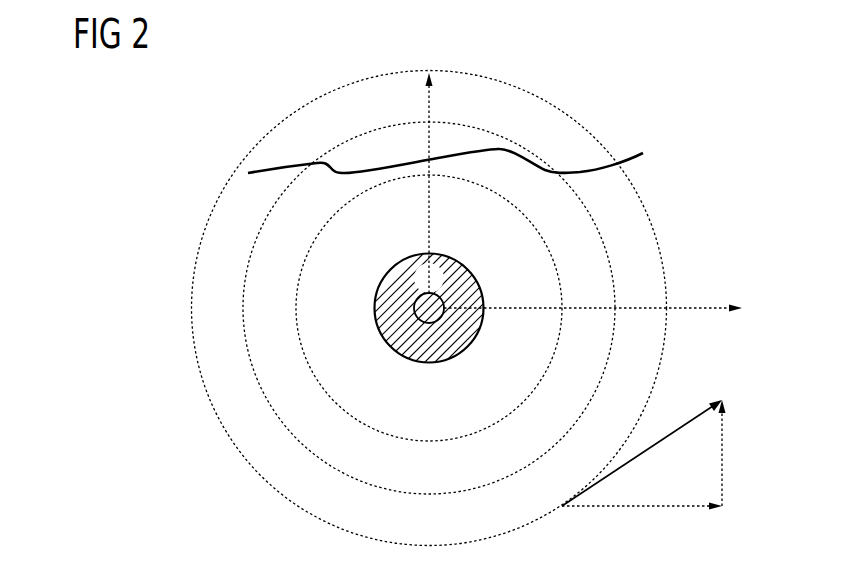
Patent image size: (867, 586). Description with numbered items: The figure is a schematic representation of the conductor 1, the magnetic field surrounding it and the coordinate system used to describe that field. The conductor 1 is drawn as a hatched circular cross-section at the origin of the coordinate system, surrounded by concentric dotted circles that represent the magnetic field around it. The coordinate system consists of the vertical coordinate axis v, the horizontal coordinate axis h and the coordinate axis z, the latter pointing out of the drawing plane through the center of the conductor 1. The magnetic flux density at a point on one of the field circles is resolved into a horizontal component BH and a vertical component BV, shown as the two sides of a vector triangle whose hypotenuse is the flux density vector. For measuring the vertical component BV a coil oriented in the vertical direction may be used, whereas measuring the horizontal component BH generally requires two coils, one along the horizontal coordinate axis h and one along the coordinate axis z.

The conductor 1 is at (385, 328).
The v* coordinate axis v is at (439, 183).
The h* coordinate axis h is at (593, 294).
The z* coordinate axis z is at (424, 300).
The horizontal component of the magnetic flux density BH is at (642, 525).
The vertical component of the magnetic flux density BV is at (735, 453).